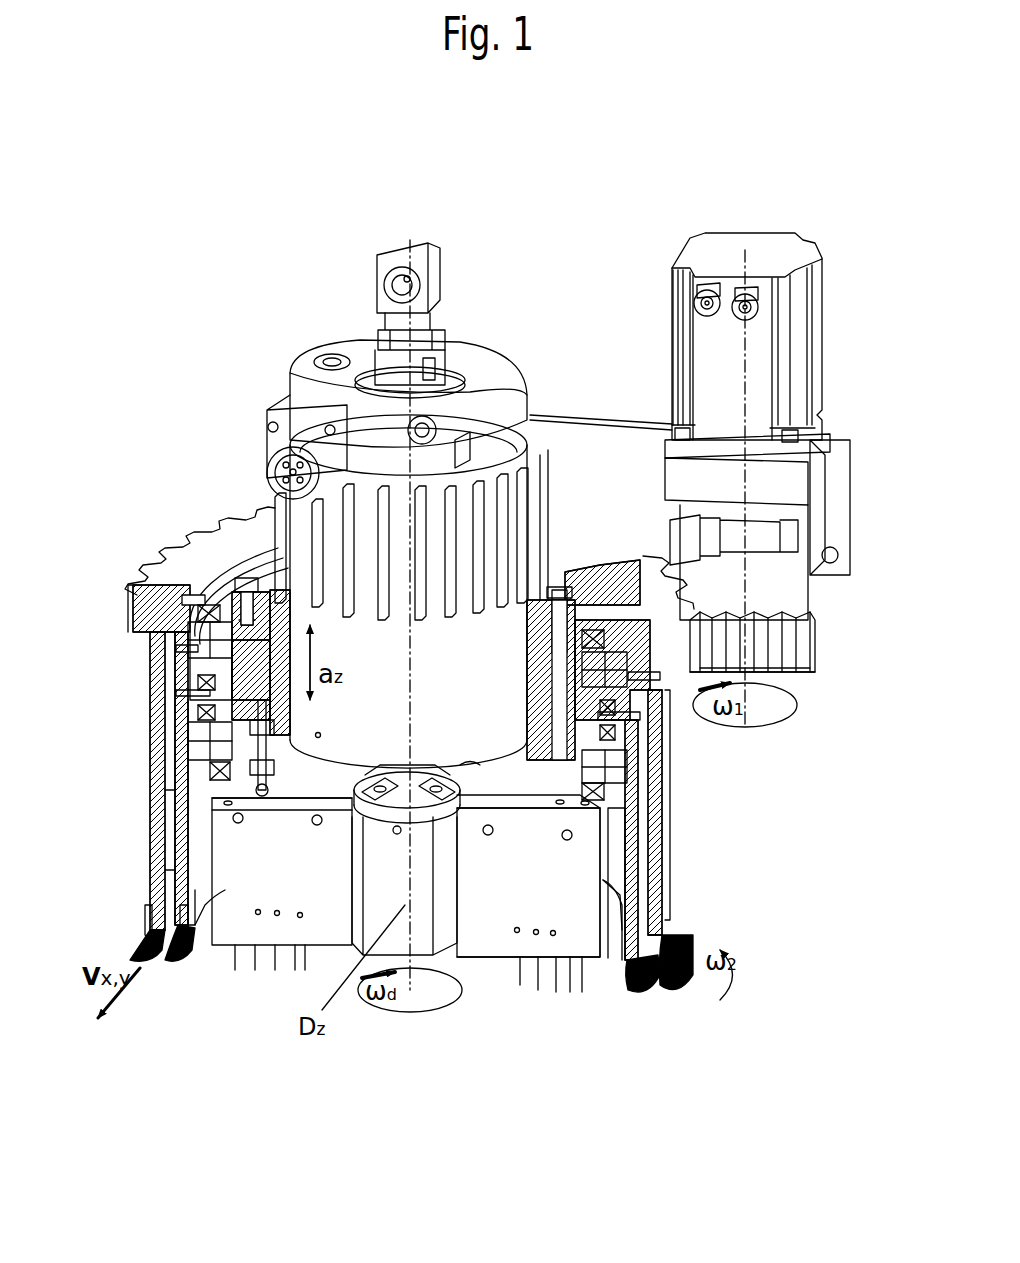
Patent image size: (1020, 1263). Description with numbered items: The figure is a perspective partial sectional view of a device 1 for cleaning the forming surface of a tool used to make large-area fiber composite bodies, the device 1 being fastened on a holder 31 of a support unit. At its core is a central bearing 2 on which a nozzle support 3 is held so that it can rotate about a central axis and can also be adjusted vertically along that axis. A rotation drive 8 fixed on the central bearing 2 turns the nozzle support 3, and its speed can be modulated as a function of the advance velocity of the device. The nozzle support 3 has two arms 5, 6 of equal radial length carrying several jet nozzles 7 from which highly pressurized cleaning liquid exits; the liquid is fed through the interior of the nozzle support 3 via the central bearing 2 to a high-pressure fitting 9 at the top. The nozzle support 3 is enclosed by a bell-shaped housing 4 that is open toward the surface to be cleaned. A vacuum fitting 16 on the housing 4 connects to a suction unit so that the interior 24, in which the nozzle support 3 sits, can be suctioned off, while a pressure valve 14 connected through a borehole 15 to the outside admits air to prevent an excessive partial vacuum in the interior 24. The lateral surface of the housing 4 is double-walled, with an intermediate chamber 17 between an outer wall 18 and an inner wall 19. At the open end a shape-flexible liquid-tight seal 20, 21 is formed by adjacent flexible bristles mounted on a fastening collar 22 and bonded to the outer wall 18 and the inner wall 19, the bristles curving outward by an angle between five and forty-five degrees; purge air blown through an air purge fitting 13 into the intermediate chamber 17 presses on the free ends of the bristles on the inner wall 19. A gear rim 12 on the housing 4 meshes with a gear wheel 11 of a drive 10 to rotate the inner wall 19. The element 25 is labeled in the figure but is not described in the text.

The device 1 is at (842, 743).
The central bearing 2 is at (492, 714).
The nozzle support 3 is at (445, 925).
The housing 4 is at (150, 845).
The arm 5 is at (228, 913).
The arm 6 is at (582, 943).
The jet nozzle 7 is at (234, 947).
The rotation drive 8 is at (303, 373).
The high-pressure fitting 9 is at (388, 283).
The drive 10 is at (826, 326).
The gear wheel 11 is at (815, 648).
The gear rim 12 is at (152, 560).
The air purge fitting 13 is at (241, 582).
The pressure valve 14 is at (262, 750).
The borehole 15 is at (280, 612).
The vacuum fitting 16 is at (556, 590).
The intermediate chamber 17 is at (168, 820).
The outer wall 18 is at (152, 860).
The inner wall 19 is at (178, 882).
The shape-flexible liquid-tight seal 20 is at (135, 948).
The shape-flexible liquid-tight seal 21 is at (168, 962).
The fastening collar 22 is at (148, 918).
The interior 24 is at (622, 847).
The tool holder 25 is at (610, 952).
The holder 31 is at (570, 445).